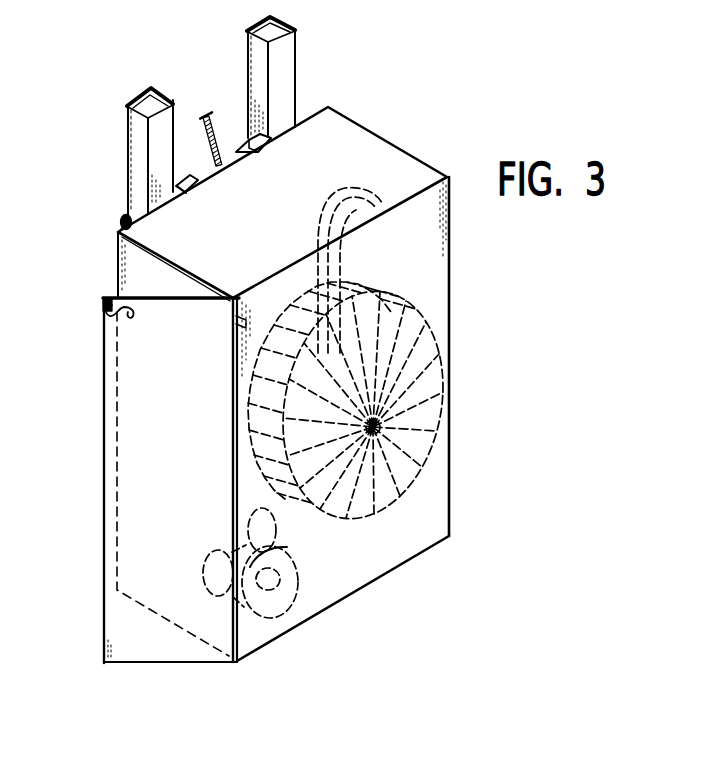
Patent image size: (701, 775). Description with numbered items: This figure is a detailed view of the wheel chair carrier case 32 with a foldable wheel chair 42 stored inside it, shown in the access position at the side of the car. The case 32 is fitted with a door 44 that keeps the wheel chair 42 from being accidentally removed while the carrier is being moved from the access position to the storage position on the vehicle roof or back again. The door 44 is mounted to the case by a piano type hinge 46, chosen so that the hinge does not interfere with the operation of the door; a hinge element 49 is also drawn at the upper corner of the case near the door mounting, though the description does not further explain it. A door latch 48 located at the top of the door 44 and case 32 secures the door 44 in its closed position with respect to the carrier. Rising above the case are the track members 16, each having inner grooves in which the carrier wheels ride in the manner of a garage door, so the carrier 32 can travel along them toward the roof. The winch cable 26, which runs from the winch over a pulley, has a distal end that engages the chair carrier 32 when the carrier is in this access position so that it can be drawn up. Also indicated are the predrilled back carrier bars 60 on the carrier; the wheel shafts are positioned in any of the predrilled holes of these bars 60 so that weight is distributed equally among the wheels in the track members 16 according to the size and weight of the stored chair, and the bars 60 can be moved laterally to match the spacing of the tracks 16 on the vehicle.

The tracks 16 is at (170, 137).
The winch cable 26 is at (218, 137).
The chair carrier case 32 is at (433, 274).
The foldable wheel chair 42 is at (452, 394).
The door 44 is at (160, 414).
The piano type hinge 46 is at (239, 318).
The door latch 48 is at (135, 317).
The hinge pin 49 is at (119, 224).
The back carrier bars 60 is at (170, 192).